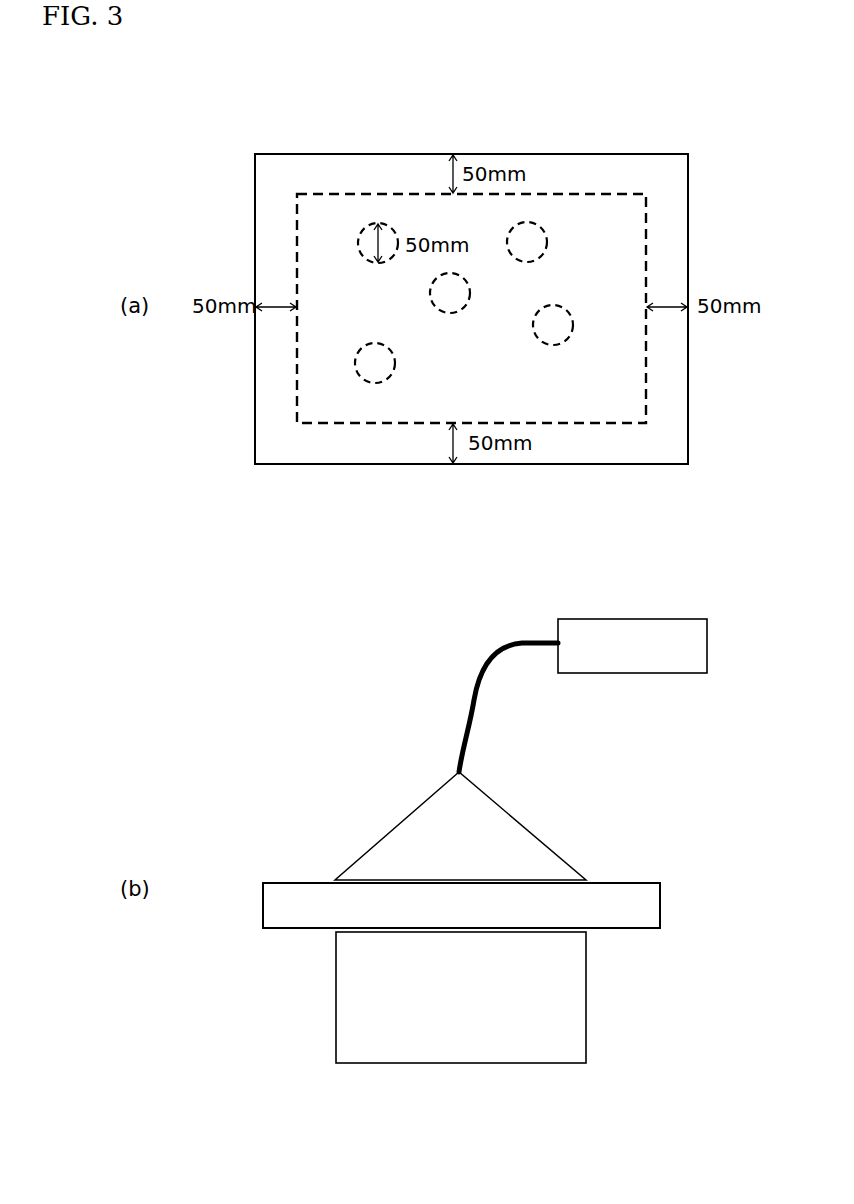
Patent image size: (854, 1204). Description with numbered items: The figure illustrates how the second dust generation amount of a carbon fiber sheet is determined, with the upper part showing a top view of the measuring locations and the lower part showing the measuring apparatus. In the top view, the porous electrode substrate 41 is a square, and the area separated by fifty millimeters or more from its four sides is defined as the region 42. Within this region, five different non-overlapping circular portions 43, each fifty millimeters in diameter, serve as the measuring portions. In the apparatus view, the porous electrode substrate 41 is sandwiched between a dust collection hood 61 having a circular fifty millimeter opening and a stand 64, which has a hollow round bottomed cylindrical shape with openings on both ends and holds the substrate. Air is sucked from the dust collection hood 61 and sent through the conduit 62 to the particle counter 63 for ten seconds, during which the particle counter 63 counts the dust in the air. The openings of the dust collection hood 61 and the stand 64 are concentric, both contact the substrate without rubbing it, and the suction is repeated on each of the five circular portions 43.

The porous electrode substrate 41 is at (373, 153).
The region 42 is at (547, 194).
The circular portions 43 is at (368, 376).
The dust collection hood 61 is at (528, 827).
The conduit 62 is at (470, 689).
The particle counter 63 is at (647, 648).
The stand 64 is at (586, 1017).